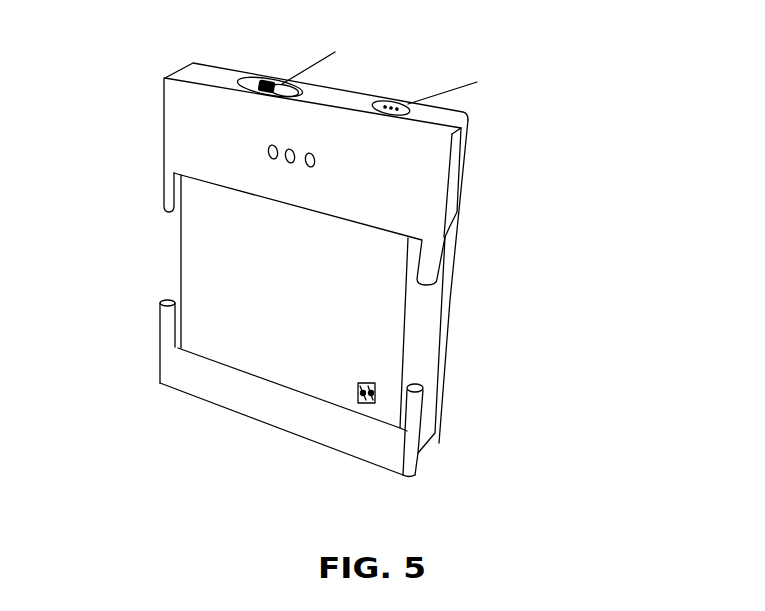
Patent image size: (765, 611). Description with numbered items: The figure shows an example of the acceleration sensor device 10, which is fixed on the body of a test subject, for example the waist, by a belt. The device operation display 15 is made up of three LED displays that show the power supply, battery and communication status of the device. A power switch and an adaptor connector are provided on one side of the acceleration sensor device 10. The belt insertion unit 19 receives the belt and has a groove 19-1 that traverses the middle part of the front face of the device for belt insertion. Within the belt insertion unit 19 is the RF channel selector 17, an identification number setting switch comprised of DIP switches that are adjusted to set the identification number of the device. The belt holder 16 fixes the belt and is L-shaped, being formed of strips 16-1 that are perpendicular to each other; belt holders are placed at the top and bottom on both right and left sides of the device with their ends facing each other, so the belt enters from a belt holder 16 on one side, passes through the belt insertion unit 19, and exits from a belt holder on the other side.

The acceleration sensor device 10 is at (405, 175).
The device operation display 15 is at (314, 163).
The belt insertion unit 19 is at (197, 257).
The groove 19-1 is at (322, 273).
The RF channel selector 17 is at (376, 385).
The belt holder 16 is at (193, 377).
The strip 16-1 is at (410, 409).